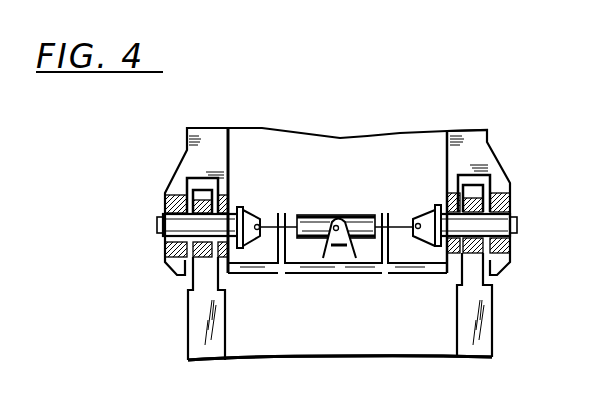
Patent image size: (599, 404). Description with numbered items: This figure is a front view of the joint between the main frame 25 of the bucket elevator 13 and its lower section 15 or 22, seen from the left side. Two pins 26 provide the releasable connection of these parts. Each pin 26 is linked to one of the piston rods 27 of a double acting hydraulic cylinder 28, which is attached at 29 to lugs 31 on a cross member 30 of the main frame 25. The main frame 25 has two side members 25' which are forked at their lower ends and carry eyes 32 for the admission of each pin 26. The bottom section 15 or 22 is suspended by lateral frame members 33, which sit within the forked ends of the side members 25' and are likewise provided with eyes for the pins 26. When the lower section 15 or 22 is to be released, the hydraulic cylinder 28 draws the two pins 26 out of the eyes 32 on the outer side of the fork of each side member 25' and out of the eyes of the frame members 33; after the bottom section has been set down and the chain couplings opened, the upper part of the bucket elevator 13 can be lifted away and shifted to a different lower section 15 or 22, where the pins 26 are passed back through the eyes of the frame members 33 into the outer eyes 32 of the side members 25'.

The bucket elevator 13 is at (344, 155).
The lower section 15 is at (348, 337).
The lower section 22 is at (340, 368).
The main frame 25 is at (342, 183).
The side member 25' is at (336, 198).
The pin 26 is at (226, 214).
The piston rod 27 is at (262, 226).
The double acting hydraulic cylinder 28 is at (362, 218).
The attachment point 29 is at (333, 222).
The cross member 30 is at (361, 265).
The lug 31 is at (334, 251).
The eye 32 is at (163, 211).
The lateral frame member 33 is at (197, 302).